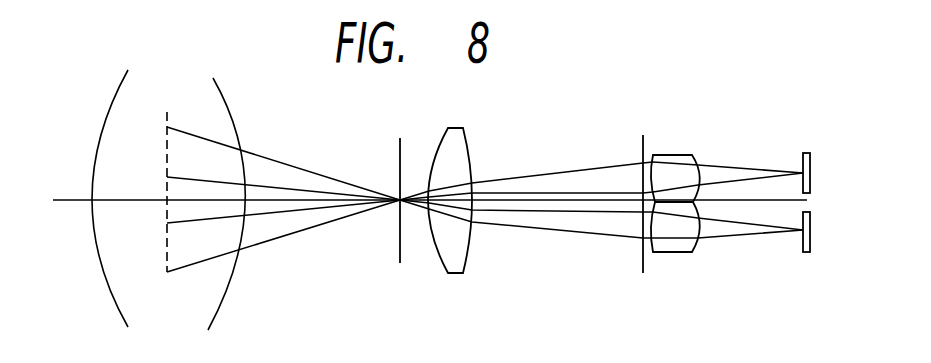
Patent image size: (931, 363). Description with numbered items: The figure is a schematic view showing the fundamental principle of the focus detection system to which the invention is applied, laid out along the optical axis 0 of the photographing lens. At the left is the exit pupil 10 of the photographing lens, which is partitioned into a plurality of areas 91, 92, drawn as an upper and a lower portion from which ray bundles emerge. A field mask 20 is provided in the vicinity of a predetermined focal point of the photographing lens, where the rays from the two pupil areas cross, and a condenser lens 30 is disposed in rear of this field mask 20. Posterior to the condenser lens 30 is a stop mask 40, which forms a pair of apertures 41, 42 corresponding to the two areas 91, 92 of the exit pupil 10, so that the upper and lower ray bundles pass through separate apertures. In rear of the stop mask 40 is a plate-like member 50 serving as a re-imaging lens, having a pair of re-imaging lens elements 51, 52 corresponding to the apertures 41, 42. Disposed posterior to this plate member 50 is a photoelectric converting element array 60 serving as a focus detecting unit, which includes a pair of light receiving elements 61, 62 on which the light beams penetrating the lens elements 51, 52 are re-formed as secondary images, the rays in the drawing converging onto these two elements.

The optical axis 0 is at (418, 201).
The exit pupil 10 is at (168, 212).
The area of exit pupil 91 is at (266, 163).
The area of exit pupil 92 is at (266, 236).
The field mask 20 is at (400, 216).
The condenser lens 30 is at (460, 217).
The aperture 41 is at (632, 175).
The aperture 42 is at (635, 223).
The stop mask 40 is at (632, 225).
The plate-like member 50 is at (685, 220).
The re-imaging lens element 51 is at (685, 240).
The re-imaging lens element 52 is at (683, 163).
The photoelectric converting element array 60 is at (748, 223).
The light receiving element 61 is at (748, 173).
The light receiving element 62 is at (748, 232).